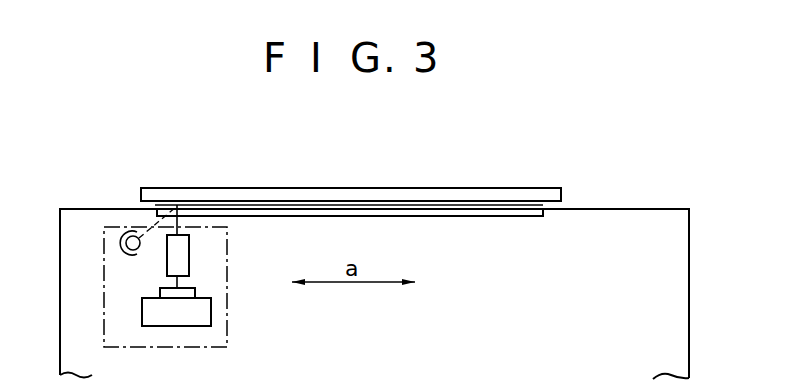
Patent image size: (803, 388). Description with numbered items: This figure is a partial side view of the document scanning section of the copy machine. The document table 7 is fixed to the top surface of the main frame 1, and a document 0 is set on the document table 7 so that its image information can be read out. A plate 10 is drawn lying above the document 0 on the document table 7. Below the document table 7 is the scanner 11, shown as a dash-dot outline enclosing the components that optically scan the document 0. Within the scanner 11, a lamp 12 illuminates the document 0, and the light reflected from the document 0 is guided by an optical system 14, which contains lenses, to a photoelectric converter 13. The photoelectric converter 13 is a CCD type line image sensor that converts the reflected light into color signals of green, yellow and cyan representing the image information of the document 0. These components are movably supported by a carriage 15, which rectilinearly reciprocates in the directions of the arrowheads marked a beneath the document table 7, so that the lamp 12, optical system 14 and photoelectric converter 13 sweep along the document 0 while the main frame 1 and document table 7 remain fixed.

The document 0 is at (351, 204).
The main frame 1 is at (689, 219).
The document table 7 is at (490, 216).
The cover plate 10 is at (486, 195).
The scanner 11 is at (162, 350).
The lamp 12 is at (121, 246).
The photoelectric converter 13 is at (195, 291).
The optical system 14 is at (188, 258).
The carriage 15 is at (207, 313).